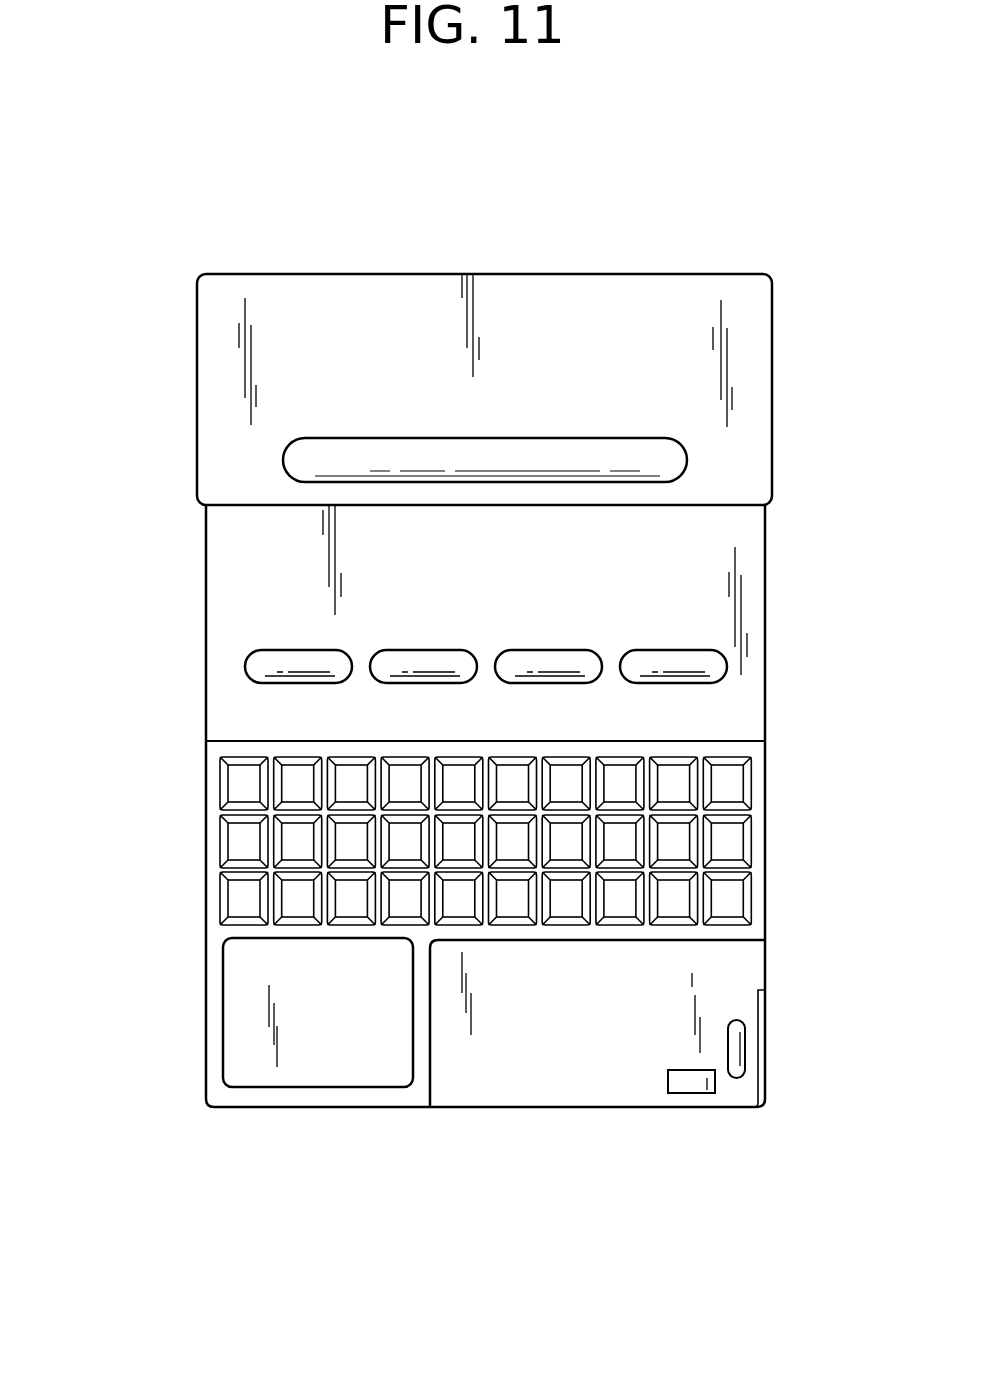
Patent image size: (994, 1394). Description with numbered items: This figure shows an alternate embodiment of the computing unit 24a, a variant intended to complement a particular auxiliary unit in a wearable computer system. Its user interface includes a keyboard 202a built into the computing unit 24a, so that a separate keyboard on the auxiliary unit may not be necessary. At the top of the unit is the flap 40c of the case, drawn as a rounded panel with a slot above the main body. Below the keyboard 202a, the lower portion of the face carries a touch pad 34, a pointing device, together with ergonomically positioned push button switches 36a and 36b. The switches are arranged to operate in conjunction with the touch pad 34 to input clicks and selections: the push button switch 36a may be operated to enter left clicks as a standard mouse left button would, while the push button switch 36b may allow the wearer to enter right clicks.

The flap 40c is at (758, 390).
The keyboard 202a is at (195, 743).
The computing unit 24a is at (341, 1158).
The touch pad 34 is at (243, 1035).
The push button switch 36a is at (740, 1018).
The push button switch 36b is at (680, 1090).